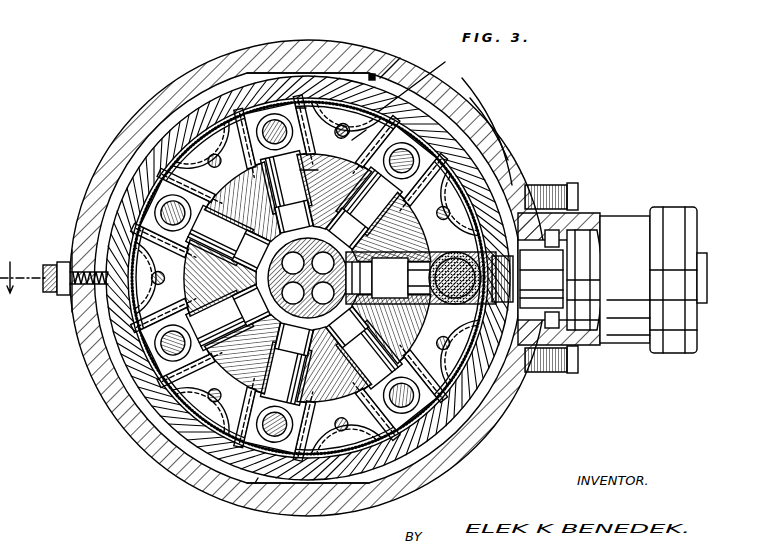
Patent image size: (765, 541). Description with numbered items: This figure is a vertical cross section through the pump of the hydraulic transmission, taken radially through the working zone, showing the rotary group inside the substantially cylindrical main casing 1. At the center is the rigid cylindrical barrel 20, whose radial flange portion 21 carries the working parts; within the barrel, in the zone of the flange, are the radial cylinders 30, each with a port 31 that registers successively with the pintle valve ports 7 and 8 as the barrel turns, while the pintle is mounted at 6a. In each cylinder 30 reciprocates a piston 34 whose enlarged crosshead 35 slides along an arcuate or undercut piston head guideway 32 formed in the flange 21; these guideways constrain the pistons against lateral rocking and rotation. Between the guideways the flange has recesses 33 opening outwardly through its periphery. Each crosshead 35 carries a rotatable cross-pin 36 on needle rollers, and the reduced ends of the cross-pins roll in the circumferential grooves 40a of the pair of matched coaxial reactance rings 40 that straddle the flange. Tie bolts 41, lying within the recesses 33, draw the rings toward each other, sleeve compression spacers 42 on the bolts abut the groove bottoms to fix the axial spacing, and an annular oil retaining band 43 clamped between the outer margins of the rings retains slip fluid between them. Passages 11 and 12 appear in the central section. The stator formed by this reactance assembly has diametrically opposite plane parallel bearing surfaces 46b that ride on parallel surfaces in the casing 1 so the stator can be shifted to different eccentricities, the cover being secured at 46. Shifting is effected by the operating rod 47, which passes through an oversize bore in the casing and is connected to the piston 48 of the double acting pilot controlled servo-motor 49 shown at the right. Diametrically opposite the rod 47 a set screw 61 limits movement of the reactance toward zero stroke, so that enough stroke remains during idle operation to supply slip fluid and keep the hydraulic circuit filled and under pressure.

The main casing 1 is at (488, 446).
The drive shaft portion 6a is at (426, 278).
The pintle valve port 7 is at (421, 270).
The pintle valve port 8 is at (276, 306).
The fluid passage 11 is at (308, 278).
The fluid passage 12 is at (308, 293).
The cylindrical barrel 20 is at (500, 168).
The radial flange portion 21 is at (500, 156).
The radial cylinder 30 is at (294, 223).
The port 31 is at (318, 382).
The piston head guideway 32 is at (492, 140).
The recess 33 is at (308, 278).
The piston 34 is at (305, 172).
The crosshead 35 is at (303, 111).
The cross-pin 36 is at (470, 115).
The reactance ring 40 is at (462, 95).
The circumferential groove 40a is at (448, 82).
The tie bolt 41 is at (356, 137).
The sleeve compression spacer 42 is at (334, 132).
The annular oil retaining band 43 is at (423, 81).
The end cover bolt 46 is at (530, 182).
The plane parallel bearing surface 46b is at (375, 82).
The operating rod 47 is at (541, 294).
The piston 48 is at (586, 232).
The servo-motor 49 is at (635, 222).
The set screw 61 is at (55, 292).